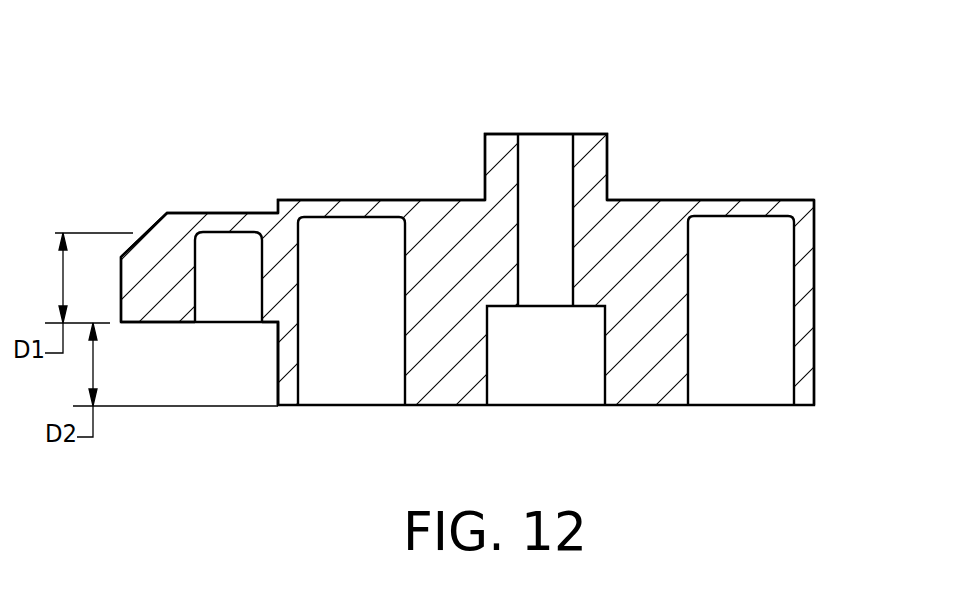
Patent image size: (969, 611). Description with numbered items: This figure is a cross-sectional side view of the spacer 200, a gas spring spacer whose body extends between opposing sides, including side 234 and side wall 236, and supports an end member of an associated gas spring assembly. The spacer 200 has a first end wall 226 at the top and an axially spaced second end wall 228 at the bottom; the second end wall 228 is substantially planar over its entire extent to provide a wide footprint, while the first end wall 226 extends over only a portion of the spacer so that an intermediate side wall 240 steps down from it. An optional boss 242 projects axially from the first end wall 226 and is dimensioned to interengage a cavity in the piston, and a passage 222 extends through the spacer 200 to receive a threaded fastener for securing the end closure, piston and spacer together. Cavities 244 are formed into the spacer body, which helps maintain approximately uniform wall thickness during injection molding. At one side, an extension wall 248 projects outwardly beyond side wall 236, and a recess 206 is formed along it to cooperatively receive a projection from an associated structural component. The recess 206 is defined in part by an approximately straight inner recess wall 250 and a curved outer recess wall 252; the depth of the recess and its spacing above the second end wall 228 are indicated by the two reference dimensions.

The spacer 200 is at (722, 95).
The recess 206 is at (232, 258).
The passage 222 is at (543, 158).
The first end wall 226 is at (645, 199).
The second end wall 228 is at (632, 406).
The side 234 is at (814, 283).
The side wall 236 is at (277, 372).
The intermediate side wall 240 is at (273, 208).
The boss 242 is at (485, 168).
The cavity 244 is at (330, 395).
The extension wall 248 is at (172, 260).
The inner recess wall 250 is at (284, 316).
The outer recess wall 252 is at (187, 300).